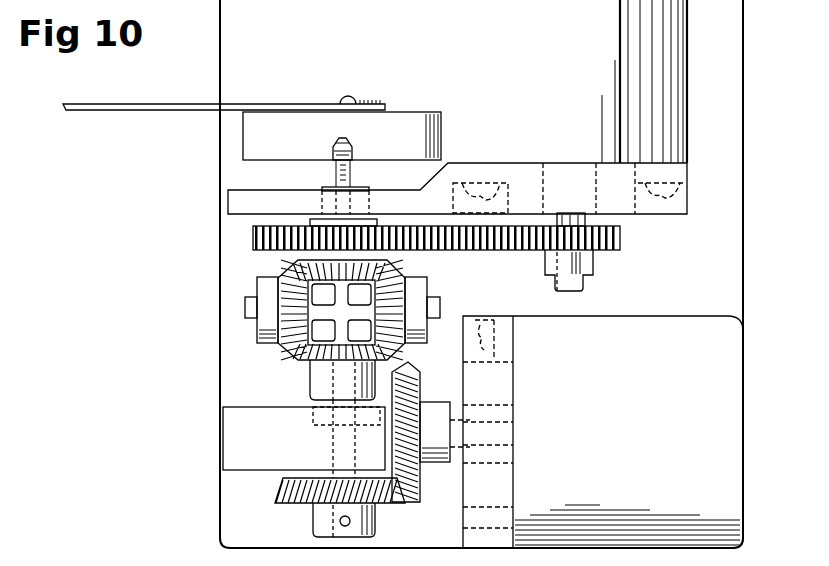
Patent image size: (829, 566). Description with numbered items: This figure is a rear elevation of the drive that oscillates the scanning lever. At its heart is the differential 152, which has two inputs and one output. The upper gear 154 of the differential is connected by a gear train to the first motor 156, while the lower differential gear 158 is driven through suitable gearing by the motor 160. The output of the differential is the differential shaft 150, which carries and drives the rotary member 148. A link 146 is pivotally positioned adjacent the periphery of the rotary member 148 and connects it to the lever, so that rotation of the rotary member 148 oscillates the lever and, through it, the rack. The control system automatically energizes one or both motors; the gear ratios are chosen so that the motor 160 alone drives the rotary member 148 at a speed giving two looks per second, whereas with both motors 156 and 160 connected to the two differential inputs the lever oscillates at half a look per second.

The link 146 is at (158, 104).
The rotary member 148 is at (403, 118).
The differential shaft 150 is at (338, 320).
The differential 152 is at (452, 283).
The upper gear 154 is at (300, 251).
The first motor 156 is at (680, 123).
The lower differential gear 158 is at (318, 371).
The motor 160 is at (690, 318).